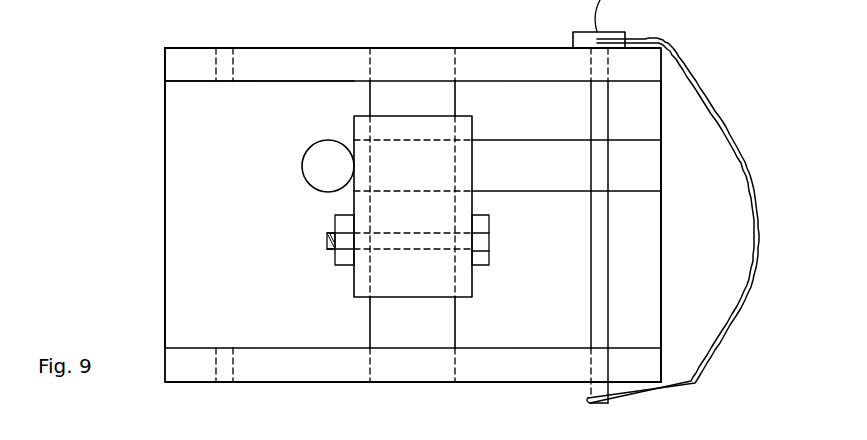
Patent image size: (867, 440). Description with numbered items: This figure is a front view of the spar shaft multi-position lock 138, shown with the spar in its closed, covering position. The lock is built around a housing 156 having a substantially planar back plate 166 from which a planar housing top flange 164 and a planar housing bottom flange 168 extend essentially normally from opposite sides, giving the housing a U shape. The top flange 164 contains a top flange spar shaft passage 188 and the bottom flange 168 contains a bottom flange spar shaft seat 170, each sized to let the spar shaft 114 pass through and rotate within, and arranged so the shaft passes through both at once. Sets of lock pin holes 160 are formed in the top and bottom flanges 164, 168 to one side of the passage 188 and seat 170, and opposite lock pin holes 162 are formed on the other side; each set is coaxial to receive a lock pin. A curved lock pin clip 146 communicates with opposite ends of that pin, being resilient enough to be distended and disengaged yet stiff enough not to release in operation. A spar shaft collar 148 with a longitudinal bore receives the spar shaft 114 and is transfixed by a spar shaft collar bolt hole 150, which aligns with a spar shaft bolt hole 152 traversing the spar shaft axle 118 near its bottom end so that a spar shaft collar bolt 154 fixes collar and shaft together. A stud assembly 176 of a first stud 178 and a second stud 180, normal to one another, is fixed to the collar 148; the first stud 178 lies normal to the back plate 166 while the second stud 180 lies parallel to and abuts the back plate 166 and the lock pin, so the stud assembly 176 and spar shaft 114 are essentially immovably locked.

The spar shaft 114 is at (370, 98).
The spar shaft axle 118 is at (455, 333).
The spar shaft multi-position lock 138 is at (662, 65).
The lock pin clip 146 is at (760, 185).
The spar shaft collar 148 is at (362, 279).
The spar shaft collar bolt hole 150 is at (360, 250).
The spar shaft bolt hole 152 is at (433, 233).
The spar shaft collar bolt 154 is at (488, 244).
The housing 156 is at (166, 61).
The lock pin holes 160 is at (608, 70).
The opposite lock pin holes 162 is at (216, 68).
The housing top flange 164 is at (165, 72).
The back plate 166 is at (165, 228).
The housing bottom flange 168 is at (288, 348).
The bottom flange spar shaft seat 170 is at (369, 364).
The stud assembly 176 is at (549, 140).
The first stud 178 is at (325, 162).
The second stud 180 is at (653, 172).
The top flange spar shaft passage 188 is at (370, 62).